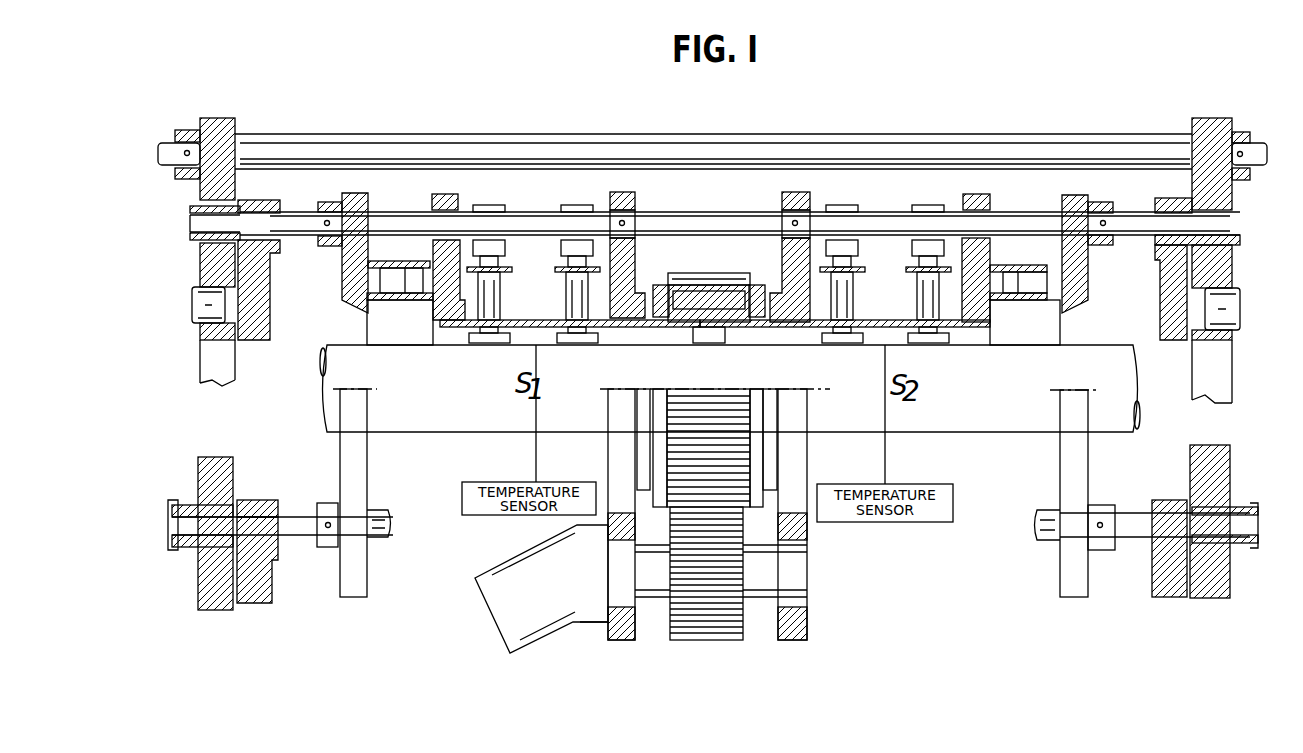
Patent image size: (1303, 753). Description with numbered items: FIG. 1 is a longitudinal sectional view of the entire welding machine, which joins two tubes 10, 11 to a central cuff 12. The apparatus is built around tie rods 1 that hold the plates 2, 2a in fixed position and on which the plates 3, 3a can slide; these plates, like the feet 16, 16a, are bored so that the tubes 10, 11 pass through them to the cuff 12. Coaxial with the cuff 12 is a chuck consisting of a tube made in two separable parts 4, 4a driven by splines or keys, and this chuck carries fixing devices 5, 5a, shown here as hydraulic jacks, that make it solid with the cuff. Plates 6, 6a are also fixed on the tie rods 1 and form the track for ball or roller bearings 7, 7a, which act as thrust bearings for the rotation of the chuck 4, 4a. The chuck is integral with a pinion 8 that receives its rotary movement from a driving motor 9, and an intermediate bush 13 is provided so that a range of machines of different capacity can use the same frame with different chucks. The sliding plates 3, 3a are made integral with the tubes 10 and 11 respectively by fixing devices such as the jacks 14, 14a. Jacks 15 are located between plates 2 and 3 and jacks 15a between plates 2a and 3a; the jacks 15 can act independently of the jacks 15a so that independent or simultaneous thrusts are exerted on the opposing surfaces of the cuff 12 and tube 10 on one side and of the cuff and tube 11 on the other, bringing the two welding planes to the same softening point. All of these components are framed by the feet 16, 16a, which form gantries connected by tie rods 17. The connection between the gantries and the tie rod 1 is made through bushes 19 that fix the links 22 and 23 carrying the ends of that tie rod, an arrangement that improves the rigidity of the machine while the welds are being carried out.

The tie rods 1 is at (520, 212).
The plate 2 is at (350, 196).
The plate 2a is at (1077, 197).
The plate 3 is at (445, 194).
The plate 3a is at (978, 194).
The chuck part 4 is at (612, 348).
The chuck part 4a is at (795, 345).
The fixing device 5 is at (572, 298).
The fixing device 5a is at (843, 308).
The plate 6 is at (622, 194).
The plate 6a is at (797, 194).
The ball or roller bearing 7 is at (662, 292).
The ball or roller bearing 7a is at (770, 292).
The pinion 8 is at (692, 273).
The driving motor 9 is at (505, 600).
The tube 10 is at (457, 418).
The tube 11 is at (968, 418).
The cuff 12 is at (572, 418).
The intermediate bush 13 is at (728, 300).
The jack 14 is at (500, 295).
The jack 14a is at (925, 290).
The jacks 15 is at (398, 310).
The jacks 15a is at (1019, 310).
The foot 16 is at (206, 263).
The foot 16a is at (1210, 370).
The tie rods 17 is at (597, 147).
The bushes 19 is at (196, 244).
The link 22 is at (262, 294).
The link 23 is at (1175, 305).